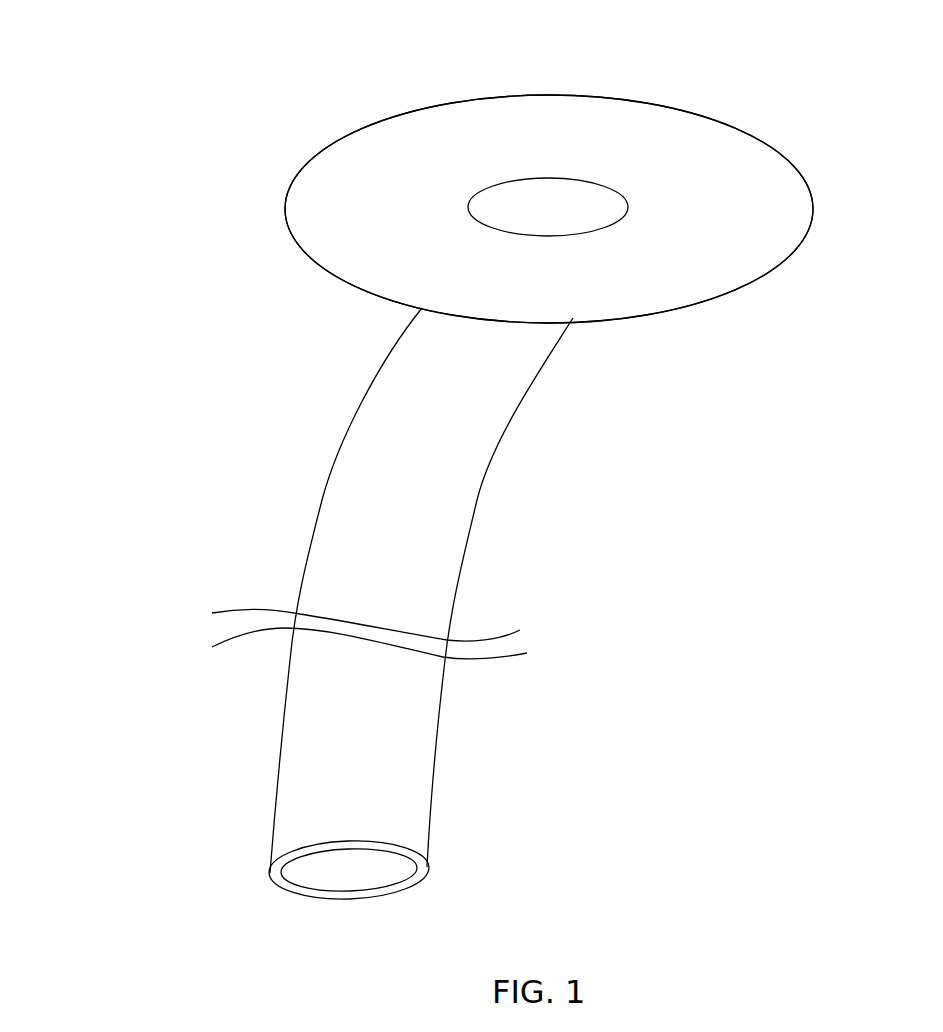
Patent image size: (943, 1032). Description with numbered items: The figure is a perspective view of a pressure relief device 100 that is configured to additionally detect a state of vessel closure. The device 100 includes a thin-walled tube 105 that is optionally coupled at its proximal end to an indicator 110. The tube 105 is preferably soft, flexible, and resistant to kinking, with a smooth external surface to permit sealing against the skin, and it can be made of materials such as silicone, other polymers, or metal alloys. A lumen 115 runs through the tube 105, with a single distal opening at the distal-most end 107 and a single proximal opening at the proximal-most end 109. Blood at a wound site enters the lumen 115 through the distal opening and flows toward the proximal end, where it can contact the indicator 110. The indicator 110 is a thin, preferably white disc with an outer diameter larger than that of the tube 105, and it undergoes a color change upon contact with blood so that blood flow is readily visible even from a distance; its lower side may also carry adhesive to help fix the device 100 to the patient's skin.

The device 100 is at (138, 49).
The indicator 110 is at (305, 197).
The proximal-most end 109 is at (587, 181).
The tube 105 is at (327, 518).
The distal-most end 107 is at (429, 862).
The lumen 115 is at (343, 886).